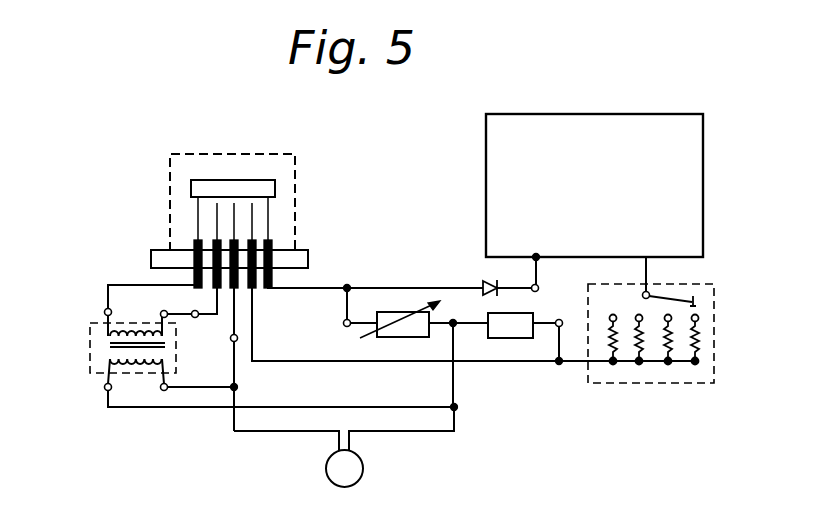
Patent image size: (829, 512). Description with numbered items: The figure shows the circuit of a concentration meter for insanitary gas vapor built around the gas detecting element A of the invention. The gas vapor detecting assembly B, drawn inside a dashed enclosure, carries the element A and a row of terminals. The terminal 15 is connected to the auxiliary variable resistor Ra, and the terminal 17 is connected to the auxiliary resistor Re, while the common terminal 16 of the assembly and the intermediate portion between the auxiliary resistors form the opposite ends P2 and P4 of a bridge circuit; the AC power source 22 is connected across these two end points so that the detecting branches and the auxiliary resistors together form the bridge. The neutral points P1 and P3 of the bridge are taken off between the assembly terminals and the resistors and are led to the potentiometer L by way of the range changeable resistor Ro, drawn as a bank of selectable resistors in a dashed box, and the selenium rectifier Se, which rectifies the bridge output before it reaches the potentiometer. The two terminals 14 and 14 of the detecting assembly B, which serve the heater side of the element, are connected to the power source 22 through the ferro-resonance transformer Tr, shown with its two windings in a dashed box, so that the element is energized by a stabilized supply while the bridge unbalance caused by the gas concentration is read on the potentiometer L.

The gas detecting element A is at (233, 182).
The gas vapor detecting assembly B is at (147, 194).
The terminals of the gas detecting assembly 14 is at (214, 242).
The terminal 15 is at (271, 244).
The common terminal 16 is at (236, 290).
The terminal 17 is at (255, 290).
The ferro-resonance transformer Tr is at (129, 350).
The bridge end point P2 is at (230, 341).
The neutral point P3 is at (348, 284).
The auxiliary variable resistor Ra is at (392, 311).
The bridge end point P4 is at (453, 318).
The selenium rectifier Se is at (489, 283).
The potentiometer L is at (700, 170).
The auxiliary resistor Re is at (511, 340).
The neutral point P1 is at (559, 365).
The range changeable resistor Ro is at (748, 350).
The AC power source 22 is at (325, 468).